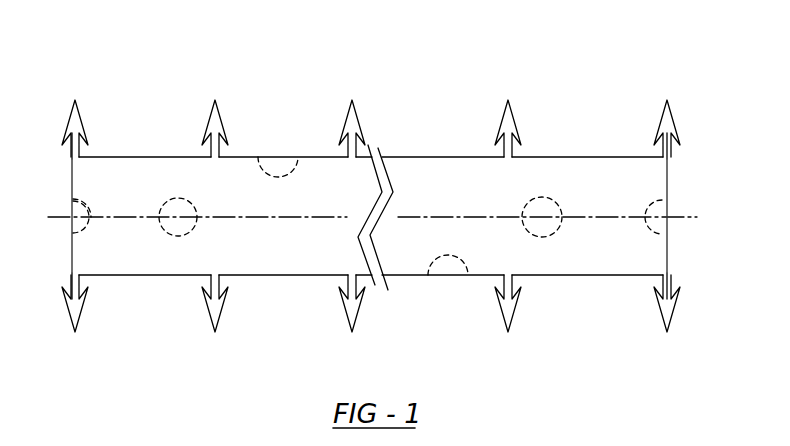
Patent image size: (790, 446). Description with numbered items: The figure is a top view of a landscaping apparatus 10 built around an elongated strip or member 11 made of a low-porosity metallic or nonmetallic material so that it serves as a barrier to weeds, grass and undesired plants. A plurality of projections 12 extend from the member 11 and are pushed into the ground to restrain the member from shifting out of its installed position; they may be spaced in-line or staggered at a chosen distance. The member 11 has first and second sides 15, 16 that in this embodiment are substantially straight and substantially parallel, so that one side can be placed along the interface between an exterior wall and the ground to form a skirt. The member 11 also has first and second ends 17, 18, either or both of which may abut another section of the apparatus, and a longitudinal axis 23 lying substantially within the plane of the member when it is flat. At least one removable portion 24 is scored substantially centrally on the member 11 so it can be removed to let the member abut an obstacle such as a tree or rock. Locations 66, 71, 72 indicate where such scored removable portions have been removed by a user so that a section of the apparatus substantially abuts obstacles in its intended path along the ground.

The landscaping apparatus 10 is at (147, 45).
The elongated member 11 is at (258, 247).
The projections 12 is at (210, 317).
The first side 15 is at (428, 157).
The second side 16 is at (605, 277).
The first end 17 is at (72, 258).
The second end 18 is at (668, 183).
The longitudinal axis 23 is at (63, 217).
The removable portion 24 is at (170, 198).
The removed portion location 66 is at (663, 203).
The removed portion location 71 is at (83, 198).
The removed portion location 72 is at (254, 157).